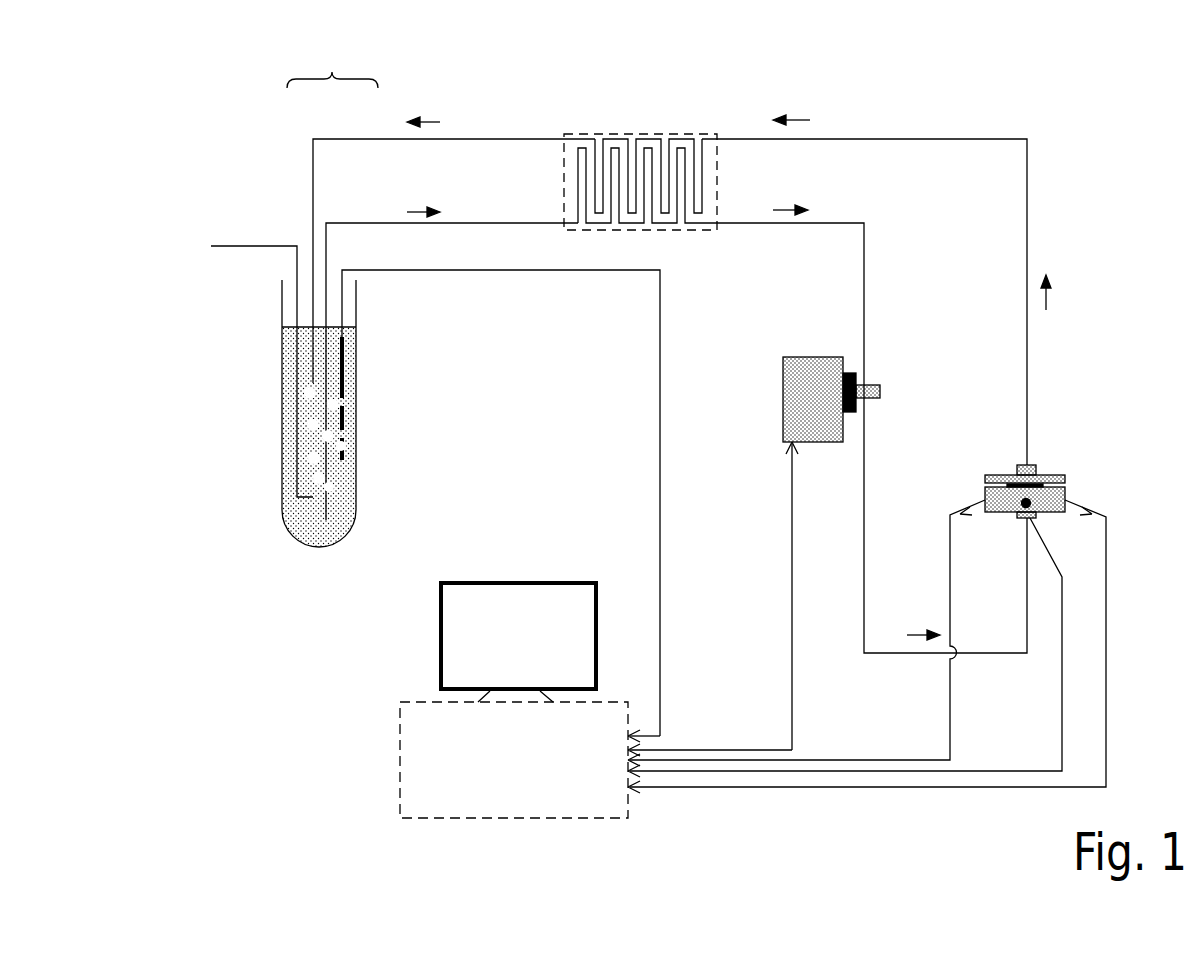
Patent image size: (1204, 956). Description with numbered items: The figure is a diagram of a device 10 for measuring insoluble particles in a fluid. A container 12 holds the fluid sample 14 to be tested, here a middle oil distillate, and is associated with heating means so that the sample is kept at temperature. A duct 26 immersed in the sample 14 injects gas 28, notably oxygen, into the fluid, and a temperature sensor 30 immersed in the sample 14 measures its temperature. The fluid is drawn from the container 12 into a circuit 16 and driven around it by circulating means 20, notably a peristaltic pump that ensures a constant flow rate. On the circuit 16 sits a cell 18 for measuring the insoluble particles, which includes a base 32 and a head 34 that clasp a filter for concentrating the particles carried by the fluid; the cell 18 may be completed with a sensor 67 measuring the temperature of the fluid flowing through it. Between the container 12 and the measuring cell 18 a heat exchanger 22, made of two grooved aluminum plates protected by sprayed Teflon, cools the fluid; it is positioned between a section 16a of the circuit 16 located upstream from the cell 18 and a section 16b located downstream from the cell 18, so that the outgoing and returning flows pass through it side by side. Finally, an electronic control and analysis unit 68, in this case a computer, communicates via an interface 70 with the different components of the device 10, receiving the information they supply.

The measuring device 10 is at (992, 126).
The container 12 is at (283, 497).
The fluid sample 14 is at (302, 527).
The circuit 16 is at (332, 66).
The upstream section of the circuit 16a is at (378, 223).
The downstream section of the circuit 16b is at (326, 138).
The measuring cell 18 is at (1092, 470).
The circulating means 20 is at (795, 412).
The heat exchanger 22 is at (700, 134).
The injection duct 26 is at (242, 247).
The gas 28 is at (317, 459).
The temperature sensor 30 is at (344, 386).
The base 32 is at (1033, 517).
The head 34 is at (1005, 475).
The fluid temperature sensor 67 is at (1033, 497).
The electronic control and analysis unit 68 is at (440, 630).
The interface 70 is at (400, 747).